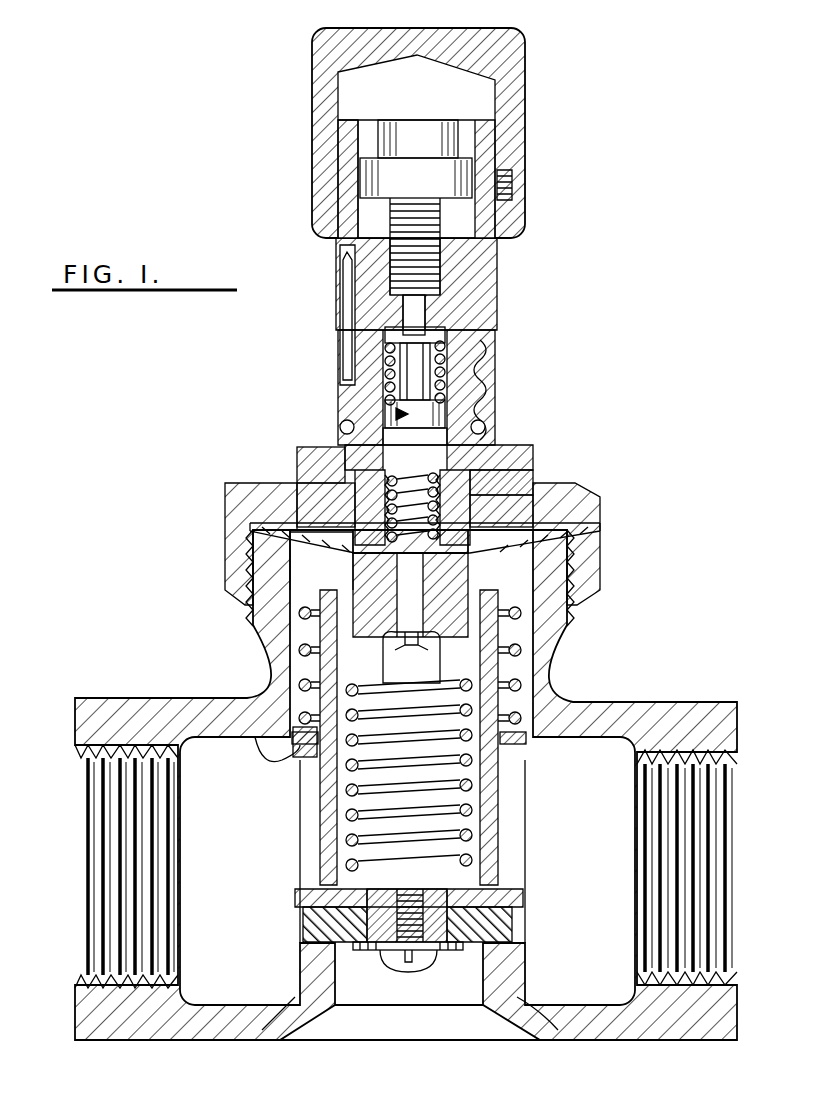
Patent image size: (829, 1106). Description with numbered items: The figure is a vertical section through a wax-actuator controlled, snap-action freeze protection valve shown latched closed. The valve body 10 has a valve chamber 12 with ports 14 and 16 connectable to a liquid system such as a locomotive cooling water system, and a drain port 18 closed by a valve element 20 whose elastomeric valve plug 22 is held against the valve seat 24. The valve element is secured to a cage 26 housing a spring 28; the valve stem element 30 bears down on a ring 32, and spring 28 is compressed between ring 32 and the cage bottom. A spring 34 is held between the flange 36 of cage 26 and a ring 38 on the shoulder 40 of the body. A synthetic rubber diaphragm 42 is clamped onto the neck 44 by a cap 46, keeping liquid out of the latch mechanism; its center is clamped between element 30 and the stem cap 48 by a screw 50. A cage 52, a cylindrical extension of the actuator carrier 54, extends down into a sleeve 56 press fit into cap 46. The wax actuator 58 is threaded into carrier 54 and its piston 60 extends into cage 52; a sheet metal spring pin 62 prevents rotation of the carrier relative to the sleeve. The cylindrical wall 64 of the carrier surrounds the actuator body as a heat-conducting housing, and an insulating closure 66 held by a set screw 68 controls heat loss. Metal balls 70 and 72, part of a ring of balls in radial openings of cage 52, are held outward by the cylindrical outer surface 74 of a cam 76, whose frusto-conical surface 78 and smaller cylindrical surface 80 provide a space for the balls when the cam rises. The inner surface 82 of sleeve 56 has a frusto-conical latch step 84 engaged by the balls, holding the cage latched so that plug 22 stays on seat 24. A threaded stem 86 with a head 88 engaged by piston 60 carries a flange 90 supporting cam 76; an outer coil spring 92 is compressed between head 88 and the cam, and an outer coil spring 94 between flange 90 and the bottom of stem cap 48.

The valve body 10 is at (625, 698).
The valve chamber 12 is at (596, 845).
The port 14 is at (728, 864).
The port 16 is at (90, 856).
The drain port 18 is at (395, 985).
The valve element 20 is at (523, 900).
The elastomeric valve plug 22 is at (512, 932).
The valve seat 24 is at (513, 942).
The cage 26 is at (320, 838).
The spring 28 is at (348, 793).
The valve stem element 30 is at (455, 586).
The ring 32 is at (353, 587).
The spring 34 is at (292, 656).
The flange 36 is at (249, 606).
The ring 38 is at (310, 763).
The shoulder 40 is at (280, 752).
The synthetic rubber diaphragm 42 is at (600, 529).
The neck 44 is at (566, 630).
The cap 46 is at (572, 486).
The stem cap 48 is at (297, 476).
The screw 50 is at (398, 644).
The cage 52 is at (472, 448).
The actuator carrier 54 is at (483, 270).
The sleeve 56 is at (484, 373).
The wax actuator 58 is at (418, 135).
The piston 60 is at (420, 310).
The sheet metal spring pin 62 is at (346, 356).
The cylindrical wall 64 is at (342, 150).
The insulating closure 66 is at (528, 86).
The set screw 68 is at (512, 186).
The metal ball 70 is at (362, 428).
The metal ball 72 is at (446, 418).
The cylindrical outer surface 74 is at (436, 410).
The cam 76 is at (385, 408).
The frusto-conical downwardly facing surface 78 is at (534, 452).
The smaller cylindrical surface 80 is at (345, 450).
The inner surface 82 is at (452, 350).
The latch step 84 is at (486, 426).
The threaded stem 86 is at (408, 365).
The head 88 is at (393, 334).
The flange 90 is at (534, 470).
The outer coil spring 92 is at (500, 360).
The outer coil spring 94 is at (580, 505).